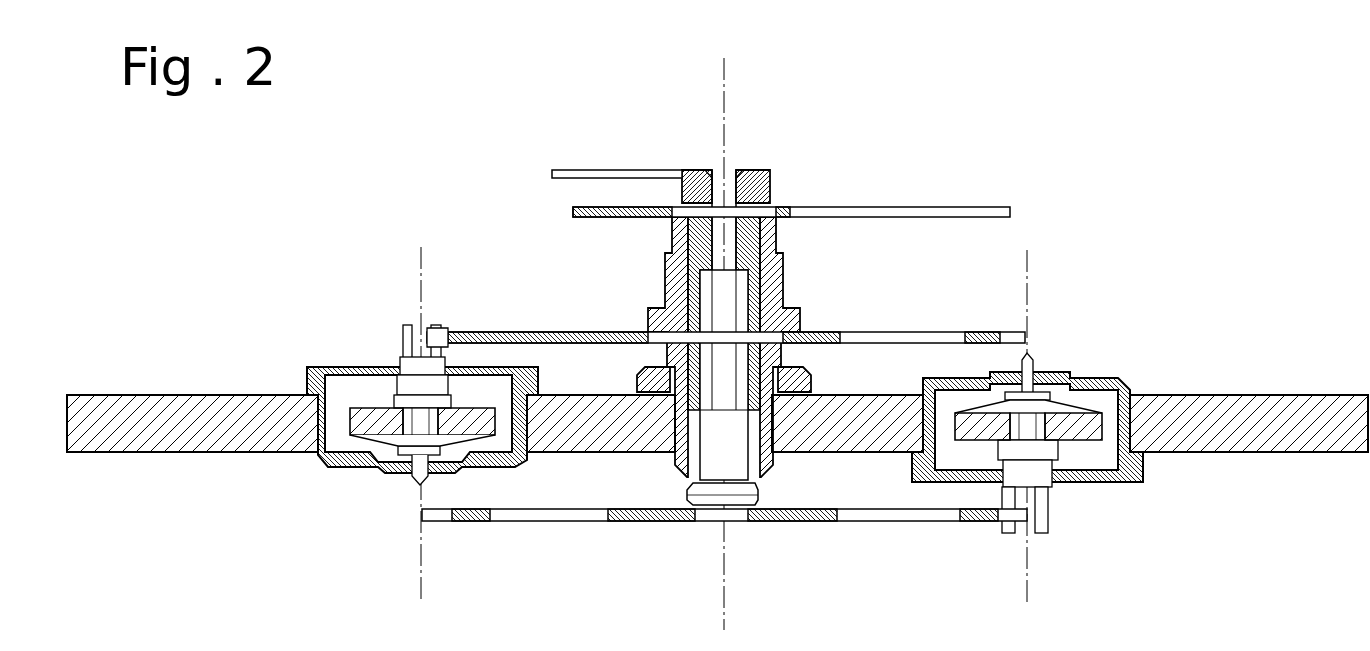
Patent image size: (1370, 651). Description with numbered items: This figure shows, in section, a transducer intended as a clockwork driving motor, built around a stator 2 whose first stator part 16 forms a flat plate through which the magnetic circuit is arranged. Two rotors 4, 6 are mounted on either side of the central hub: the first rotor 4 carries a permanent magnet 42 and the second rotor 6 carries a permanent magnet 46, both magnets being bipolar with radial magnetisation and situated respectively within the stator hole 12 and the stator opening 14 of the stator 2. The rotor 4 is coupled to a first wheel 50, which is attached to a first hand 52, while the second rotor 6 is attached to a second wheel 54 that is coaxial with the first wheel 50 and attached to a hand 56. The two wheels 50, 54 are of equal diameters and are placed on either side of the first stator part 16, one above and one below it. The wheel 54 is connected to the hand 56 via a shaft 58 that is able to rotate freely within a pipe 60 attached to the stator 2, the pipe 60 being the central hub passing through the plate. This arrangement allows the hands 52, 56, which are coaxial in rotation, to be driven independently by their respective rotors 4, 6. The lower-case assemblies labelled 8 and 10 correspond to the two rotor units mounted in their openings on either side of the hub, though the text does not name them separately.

The stator 2 is at (1276, 360).
The rotor 4 is at (410, 427).
The rotor 6 is at (1042, 468).
The first sensor unit 8 is at (383, 430).
The second sensor unit 10 is at (1047, 435).
The stator hole 12 is at (306, 423).
The stator opening 14 is at (1145, 424).
The first stator part 16 is at (186, 425).
The permanent magnet 42 is at (363, 422).
The permanent magnet 46 is at (977, 423).
The first wheel 50 is at (555, 332).
The first hand 52 is at (945, 208).
The second wheel 54 is at (795, 522).
The hand 56 is at (590, 172).
The shaft 58 is at (712, 443).
The pipe 60 is at (657, 392).